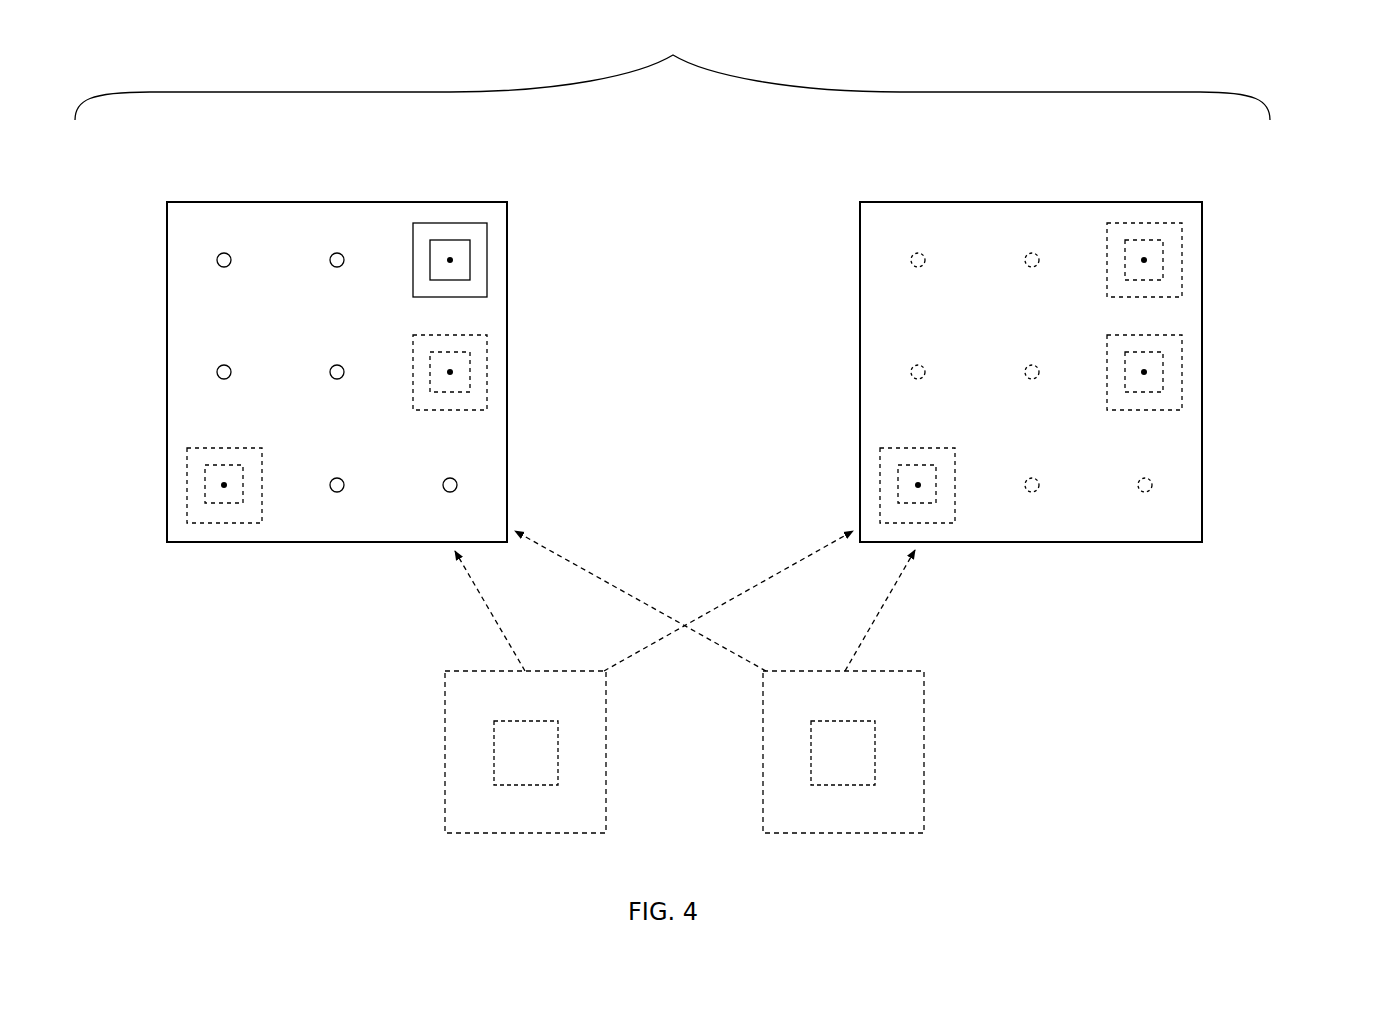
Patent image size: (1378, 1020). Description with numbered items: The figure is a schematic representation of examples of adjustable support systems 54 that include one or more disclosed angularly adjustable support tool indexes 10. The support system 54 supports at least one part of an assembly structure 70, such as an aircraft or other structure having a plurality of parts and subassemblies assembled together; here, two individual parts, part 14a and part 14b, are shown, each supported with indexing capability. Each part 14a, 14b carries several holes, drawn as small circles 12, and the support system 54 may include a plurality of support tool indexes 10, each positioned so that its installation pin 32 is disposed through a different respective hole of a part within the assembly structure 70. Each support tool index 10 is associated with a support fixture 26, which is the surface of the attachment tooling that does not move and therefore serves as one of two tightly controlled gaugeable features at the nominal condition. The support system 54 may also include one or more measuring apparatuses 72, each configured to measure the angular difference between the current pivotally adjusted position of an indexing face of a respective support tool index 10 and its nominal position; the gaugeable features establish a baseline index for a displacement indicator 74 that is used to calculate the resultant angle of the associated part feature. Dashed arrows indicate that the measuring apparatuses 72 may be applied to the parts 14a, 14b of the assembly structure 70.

The assembly structure 70 is at (672, 74).
The adjustable support system 54 is at (1318, 107).
The part 14a is at (180, 202).
The part 14b is at (875, 202).
The feature / via 12 is at (337, 253).
The support fixture 26 is at (420, 223).
The angularly adjustable support tool index 10 is at (450, 240).
The installation pin 32 is at (455, 260).
The measuring apparatus 72 is at (444, 712).
The displacement indicator 74 is at (494, 752).